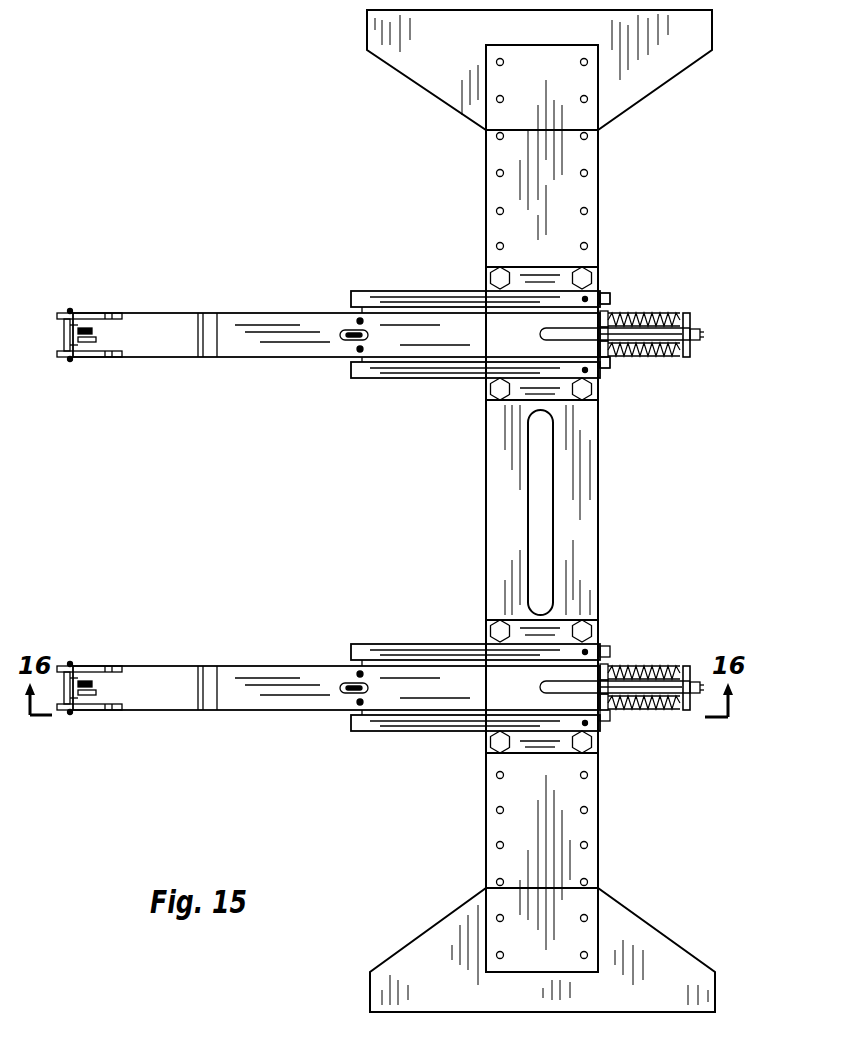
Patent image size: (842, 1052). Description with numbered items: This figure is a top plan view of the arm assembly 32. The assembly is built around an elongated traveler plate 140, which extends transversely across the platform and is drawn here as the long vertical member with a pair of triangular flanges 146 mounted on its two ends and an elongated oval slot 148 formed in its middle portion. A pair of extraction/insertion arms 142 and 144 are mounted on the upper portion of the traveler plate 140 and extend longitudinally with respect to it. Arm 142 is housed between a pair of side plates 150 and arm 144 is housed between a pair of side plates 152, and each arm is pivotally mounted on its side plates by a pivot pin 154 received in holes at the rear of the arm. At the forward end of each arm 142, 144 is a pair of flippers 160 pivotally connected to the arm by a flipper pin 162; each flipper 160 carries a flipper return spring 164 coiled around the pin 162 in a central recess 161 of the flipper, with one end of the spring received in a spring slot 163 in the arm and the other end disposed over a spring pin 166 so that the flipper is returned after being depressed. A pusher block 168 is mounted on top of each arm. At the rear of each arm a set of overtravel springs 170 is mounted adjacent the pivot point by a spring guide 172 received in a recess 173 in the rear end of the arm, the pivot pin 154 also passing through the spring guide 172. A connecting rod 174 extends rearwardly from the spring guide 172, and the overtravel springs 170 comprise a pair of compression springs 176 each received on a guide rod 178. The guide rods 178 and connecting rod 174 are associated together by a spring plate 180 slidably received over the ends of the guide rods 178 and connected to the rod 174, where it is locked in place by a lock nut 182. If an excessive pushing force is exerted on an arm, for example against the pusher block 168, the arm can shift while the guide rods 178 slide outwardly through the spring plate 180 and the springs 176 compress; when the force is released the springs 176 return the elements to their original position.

The arm assembly 32 is at (318, 110).
The traveler plate 140 is at (597, 443).
The extraction/insertion arm 142 is at (270, 313).
The extraction/insertion arm 144 is at (250, 688).
The triangular flange 146 is at (648, 78).
The elongated oval slot 148 is at (543, 610).
The side plates 150 is at (422, 293).
The side plates 152 is at (422, 646).
The pivot pin 154 is at (606, 298).
The flipper 160 is at (92, 313).
The central recess 161 is at (92, 331).
The flipper pin 162 is at (70, 310).
The spring slot 163 is at (96, 339).
The flipper return spring 164 is at (70, 360).
The spring pin 166 is at (65, 328).
The pusher block 168 is at (208, 340).
The overtravel springs 170 is at (658, 314).
The spring guide 172 is at (604, 328).
The recess 173 is at (548, 344).
The connecting rod 174 is at (636, 352).
The compression springs 176 is at (644, 668).
The guide rod 178 is at (640, 710).
The spring plate 180 is at (690, 322).
The lock nut 182 is at (697, 702).